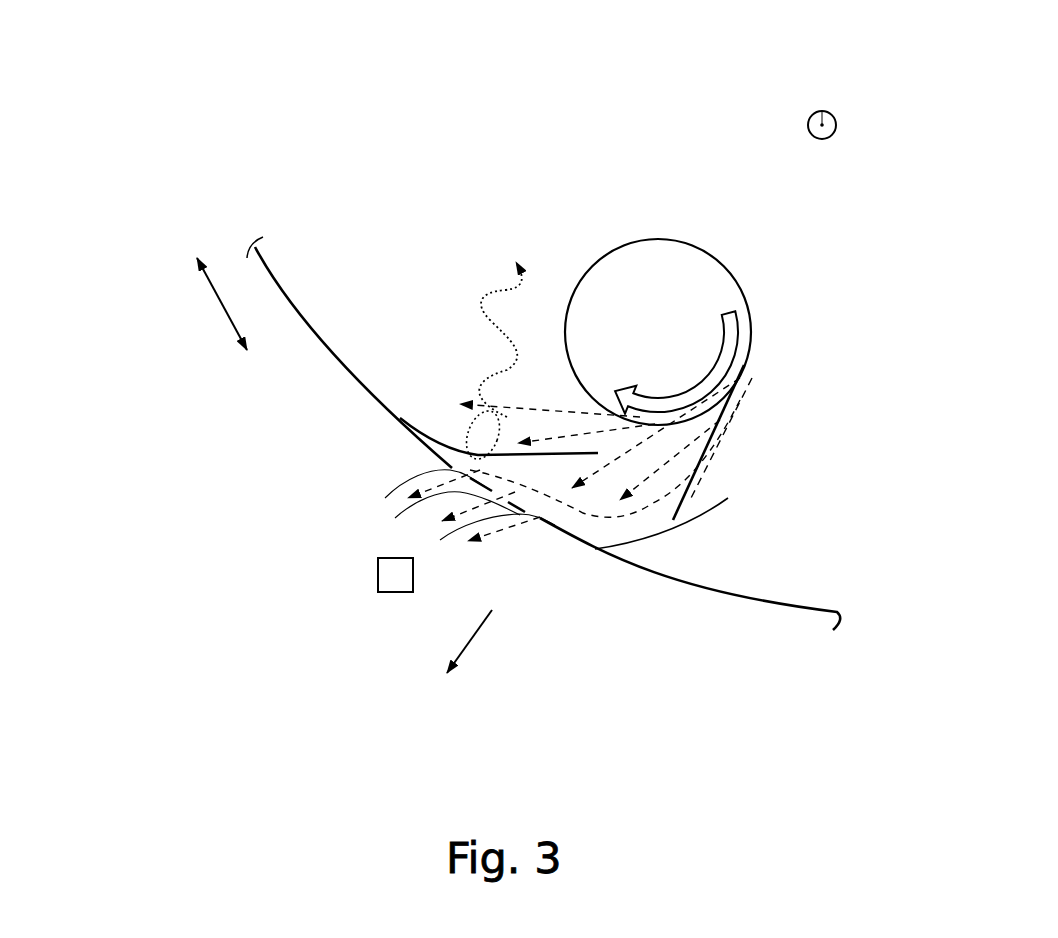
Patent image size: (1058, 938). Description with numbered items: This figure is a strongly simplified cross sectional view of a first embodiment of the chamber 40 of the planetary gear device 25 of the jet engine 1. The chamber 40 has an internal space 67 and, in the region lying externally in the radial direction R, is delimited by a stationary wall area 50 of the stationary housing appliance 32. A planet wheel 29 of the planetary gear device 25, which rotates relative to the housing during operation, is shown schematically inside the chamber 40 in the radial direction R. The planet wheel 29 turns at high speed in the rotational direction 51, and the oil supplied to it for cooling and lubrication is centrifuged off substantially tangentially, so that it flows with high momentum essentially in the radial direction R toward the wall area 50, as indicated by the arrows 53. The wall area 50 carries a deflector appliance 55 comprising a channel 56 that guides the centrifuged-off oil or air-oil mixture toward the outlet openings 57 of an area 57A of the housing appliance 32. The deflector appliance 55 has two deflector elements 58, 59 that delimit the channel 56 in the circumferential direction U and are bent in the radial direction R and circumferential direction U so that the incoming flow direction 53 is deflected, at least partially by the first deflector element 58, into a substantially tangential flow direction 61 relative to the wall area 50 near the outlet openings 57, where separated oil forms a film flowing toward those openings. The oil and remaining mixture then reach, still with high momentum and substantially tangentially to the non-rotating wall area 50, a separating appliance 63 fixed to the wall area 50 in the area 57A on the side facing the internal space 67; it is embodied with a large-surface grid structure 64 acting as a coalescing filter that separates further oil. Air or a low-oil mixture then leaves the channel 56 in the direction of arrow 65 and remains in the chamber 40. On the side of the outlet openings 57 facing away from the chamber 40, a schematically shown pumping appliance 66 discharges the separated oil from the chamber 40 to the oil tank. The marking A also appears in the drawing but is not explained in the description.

The jet engine 1 is at (352, 98).
The planetary gear device 25 is at (358, 440).
The planet wheel 29 is at (646, 265).
The stationary housing appliance 32 is at (779, 614).
The chamber 40 is at (517, 198).
The wall area 50 is at (655, 575).
The rotational direction 51 is at (733, 340).
The flow direction arrows 53 is at (572, 405).
The deflector appliance 55 is at (683, 536).
The channel 56 is at (628, 537).
The outlet openings 57 is at (472, 537).
The area of the housing appliance 57A is at (503, 536).
The first deflector element 58 is at (713, 510).
The second deflector element 59 is at (490, 440).
The tangential flow direction 61 is at (583, 518).
The separating appliance 63 is at (650, 470).
The grid structure 64 is at (467, 516).
The outflow direction arrow 65 is at (482, 320).
The pumping appliance 66 is at (385, 573).
The internal space 67 is at (364, 294).
The section mark A is at (822, 112).
The circumferential direction U is at (218, 308).
The radial direction R is at (478, 642).